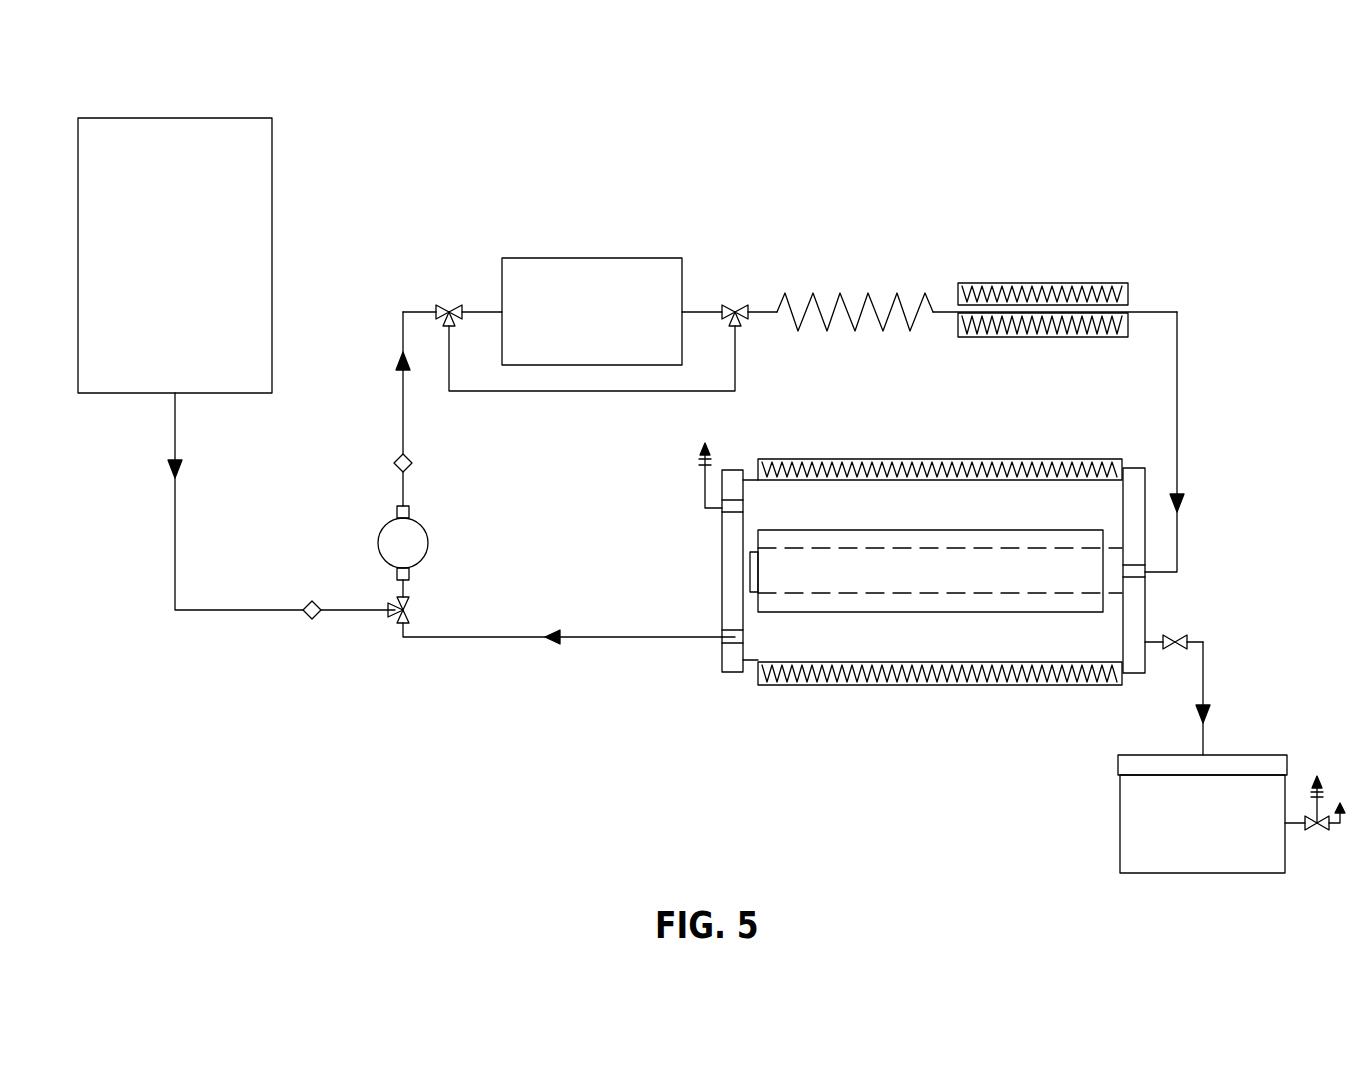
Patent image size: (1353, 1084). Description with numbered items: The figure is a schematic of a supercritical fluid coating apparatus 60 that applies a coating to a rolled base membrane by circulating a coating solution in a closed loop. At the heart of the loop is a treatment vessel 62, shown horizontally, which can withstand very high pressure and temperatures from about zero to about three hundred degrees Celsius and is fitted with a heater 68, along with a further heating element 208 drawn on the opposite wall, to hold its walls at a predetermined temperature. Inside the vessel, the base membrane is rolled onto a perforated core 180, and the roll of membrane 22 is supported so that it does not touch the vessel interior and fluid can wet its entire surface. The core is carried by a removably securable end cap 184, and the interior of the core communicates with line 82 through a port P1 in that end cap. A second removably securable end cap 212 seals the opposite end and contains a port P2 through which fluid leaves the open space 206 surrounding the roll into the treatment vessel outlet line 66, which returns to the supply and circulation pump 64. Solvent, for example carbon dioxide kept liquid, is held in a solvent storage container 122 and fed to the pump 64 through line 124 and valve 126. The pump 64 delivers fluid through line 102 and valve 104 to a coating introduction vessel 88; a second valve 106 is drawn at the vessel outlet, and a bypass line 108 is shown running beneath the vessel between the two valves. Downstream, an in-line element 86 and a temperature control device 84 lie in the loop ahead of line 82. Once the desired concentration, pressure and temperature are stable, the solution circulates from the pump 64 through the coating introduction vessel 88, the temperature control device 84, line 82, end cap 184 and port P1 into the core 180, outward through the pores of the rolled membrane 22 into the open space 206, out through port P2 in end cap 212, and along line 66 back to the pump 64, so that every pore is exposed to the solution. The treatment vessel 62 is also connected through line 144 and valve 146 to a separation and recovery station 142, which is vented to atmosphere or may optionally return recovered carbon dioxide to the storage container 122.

The supercritical fluid coating apparatus 60 is at (1265, 169).
The solvent storage container 122 is at (226, 255).
The line 124 is at (234, 506).
The valve 126 is at (445, 600).
The treatment vessel outlet line 66 is at (562, 675).
The supply and circulation pump 64 is at (447, 534).
The line 102 is at (356, 392).
The valve 104 is at (452, 274).
The coating introduction vessel 88 is at (592, 264).
The three-way valve 106 is at (729, 274).
The bypass line 108 is at (592, 402).
The heater 86 is at (855, 267).
The temperature control device 84 is at (1055, 265).
The line 82 is at (1202, 442).
The removably securable end cap 184 is at (1141, 532).
The heater 68 is at (940, 446).
The heater 208 is at (940, 699).
The open space 206 is at (916, 570).
The membrane 22 is at (926, 594).
The core 180 is at (940, 543).
The port P1 is at (1088, 527).
The second removably securable end cap 212 is at (686, 557).
The port P2 is at (765, 631).
The treatment vessel 62 is at (670, 717).
The valve 146 is at (1123, 689).
The line 144 is at (1250, 698).
The separation and recovery station 142 is at (1231, 814).